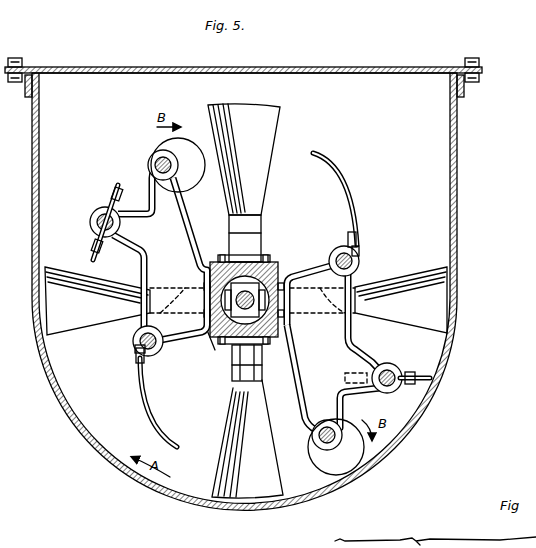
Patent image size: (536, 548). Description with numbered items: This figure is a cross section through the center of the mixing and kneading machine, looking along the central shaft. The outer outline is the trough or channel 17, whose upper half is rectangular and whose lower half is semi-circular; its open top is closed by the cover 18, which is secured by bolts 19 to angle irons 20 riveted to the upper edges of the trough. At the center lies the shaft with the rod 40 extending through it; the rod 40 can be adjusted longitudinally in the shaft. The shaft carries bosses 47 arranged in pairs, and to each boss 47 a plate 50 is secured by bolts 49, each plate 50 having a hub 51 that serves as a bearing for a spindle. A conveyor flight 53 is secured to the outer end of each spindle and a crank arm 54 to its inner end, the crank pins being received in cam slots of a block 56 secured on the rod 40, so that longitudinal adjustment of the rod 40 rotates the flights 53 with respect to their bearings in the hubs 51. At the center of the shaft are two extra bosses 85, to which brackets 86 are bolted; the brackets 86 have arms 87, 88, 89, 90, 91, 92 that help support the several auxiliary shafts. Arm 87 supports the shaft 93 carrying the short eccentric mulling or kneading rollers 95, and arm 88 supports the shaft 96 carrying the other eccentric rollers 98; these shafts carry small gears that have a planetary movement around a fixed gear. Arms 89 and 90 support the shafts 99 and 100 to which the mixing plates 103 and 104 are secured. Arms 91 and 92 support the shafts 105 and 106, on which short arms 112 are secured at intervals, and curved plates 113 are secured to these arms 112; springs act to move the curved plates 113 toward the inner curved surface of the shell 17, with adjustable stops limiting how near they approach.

The trough or channel 17 is at (458, 246).
The cover 18 is at (326, 66).
The bolts 19 is at (15, 57).
The angle irons 20 is at (465, 90).
The rod 40 is at (268, 343).
The bosses 47 is at (222, 346).
The bolts 49 is at (222, 256).
The plate 50 is at (234, 263).
The hub 51 is at (262, 232).
The conveyor flight 53 is at (282, 116).
The crank arm 54 is at (256, 300).
The block 56 is at (211, 272).
The extra bosses 85 is at (213, 350).
The brackets 86 is at (242, 304).
The arm 87 is at (186, 195).
The arm 88 is at (301, 424).
The arm 89 is at (136, 254).
The arm 90 is at (356, 360).
The arm 91 is at (140, 339).
The arm 92 is at (323, 250).
The shaft 93 is at (158, 160).
The eccentric rollers 95 is at (185, 150).
The shaft 96 is at (324, 446).
The eccentric rollers 98 is at (360, 458).
The shaft 99 is at (92, 222).
The shaft 100 is at (396, 386).
The mixing plate 103 is at (110, 190).
The mixing plate 104 is at (430, 377).
The shaft 105 is at (360, 249).
The shaft 106 is at (138, 352).
The short arms 112 is at (357, 238).
The curved plates 113 is at (340, 180).